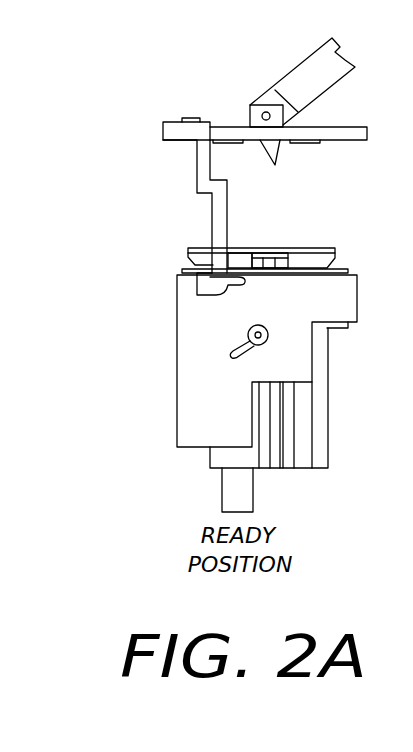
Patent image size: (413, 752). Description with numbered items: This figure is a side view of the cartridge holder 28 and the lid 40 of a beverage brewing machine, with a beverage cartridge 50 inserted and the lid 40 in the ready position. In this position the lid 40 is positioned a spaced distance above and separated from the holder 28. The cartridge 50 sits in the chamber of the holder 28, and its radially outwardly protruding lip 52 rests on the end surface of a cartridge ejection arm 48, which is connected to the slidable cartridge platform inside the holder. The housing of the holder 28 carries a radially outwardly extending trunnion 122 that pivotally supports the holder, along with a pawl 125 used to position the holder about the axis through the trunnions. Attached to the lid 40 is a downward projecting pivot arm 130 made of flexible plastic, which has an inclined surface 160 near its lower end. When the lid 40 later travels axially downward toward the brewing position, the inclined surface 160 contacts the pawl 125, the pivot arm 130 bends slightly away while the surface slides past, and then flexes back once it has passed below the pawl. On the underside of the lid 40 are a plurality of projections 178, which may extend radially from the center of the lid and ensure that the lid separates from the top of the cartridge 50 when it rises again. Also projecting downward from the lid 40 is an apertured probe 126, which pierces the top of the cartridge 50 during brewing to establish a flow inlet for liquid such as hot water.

The cartridge holder 28 is at (340, 293).
The lid 40 is at (350, 133).
The pivot arm 130 is at (212, 218).
The projections 178 is at (226, 143).
The apertured probe 126 is at (276, 152).
The beverage cartridge 50 is at (332, 257).
The radially outwardly protruding lip 52 is at (243, 250).
The cartridge ejection arm 48 is at (277, 254).
The inclined surface 160 is at (233, 289).
The pawl 125 is at (246, 337).
The trunnion 122 is at (268, 340).